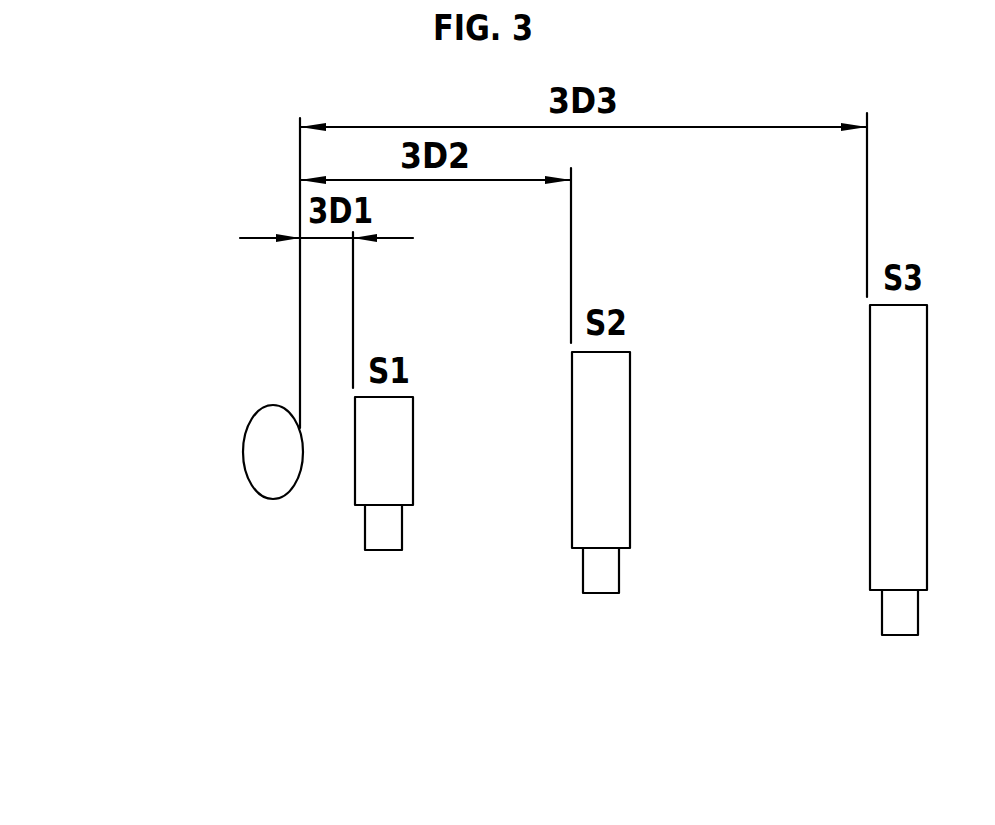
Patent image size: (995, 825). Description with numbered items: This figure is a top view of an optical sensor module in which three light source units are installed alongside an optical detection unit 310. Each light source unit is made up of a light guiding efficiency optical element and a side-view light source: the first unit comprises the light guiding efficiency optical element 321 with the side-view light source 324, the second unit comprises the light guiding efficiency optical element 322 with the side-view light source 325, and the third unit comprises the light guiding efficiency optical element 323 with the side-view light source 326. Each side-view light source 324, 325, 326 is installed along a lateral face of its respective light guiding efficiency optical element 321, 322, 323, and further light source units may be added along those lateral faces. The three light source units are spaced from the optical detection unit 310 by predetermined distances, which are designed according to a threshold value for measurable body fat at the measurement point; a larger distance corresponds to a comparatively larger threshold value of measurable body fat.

The optical detection unit 310 is at (252, 457).
The light guiding efficiency optical element 321 is at (360, 480).
The light guiding efficiency optical element 322 is at (578, 522).
The light guiding efficiency optical element 323 is at (875, 563).
The side-view light source 324 is at (390, 537).
The side-view light source 325 is at (608, 578).
The side-view light source 326 is at (905, 618).